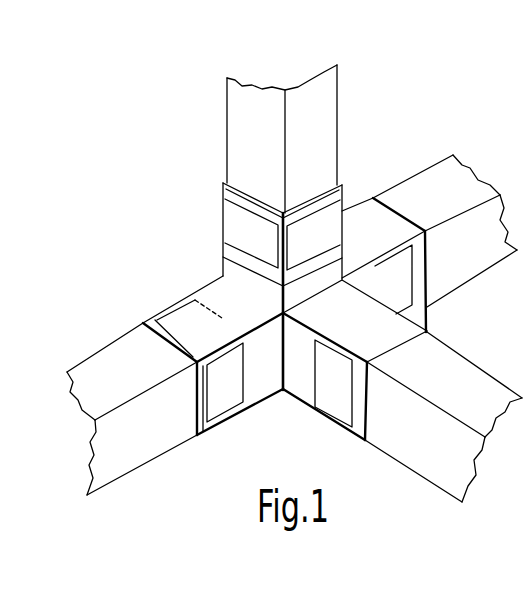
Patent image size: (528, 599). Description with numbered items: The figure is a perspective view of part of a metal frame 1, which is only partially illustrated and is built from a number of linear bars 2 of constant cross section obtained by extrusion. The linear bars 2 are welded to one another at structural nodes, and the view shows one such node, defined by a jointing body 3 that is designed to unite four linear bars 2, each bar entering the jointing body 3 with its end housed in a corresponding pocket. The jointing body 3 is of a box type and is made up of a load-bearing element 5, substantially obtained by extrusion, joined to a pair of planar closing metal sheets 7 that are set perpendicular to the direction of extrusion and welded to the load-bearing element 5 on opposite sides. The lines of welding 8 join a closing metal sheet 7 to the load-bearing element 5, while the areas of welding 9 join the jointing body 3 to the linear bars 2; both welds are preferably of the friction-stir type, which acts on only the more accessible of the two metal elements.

The metal frame 1 is at (386, 114).
The linear bar 2 is at (237, 98).
The jointing body 3 is at (181, 247).
The load-bearing element 5 is at (297, 383).
The planar closing metal sheet 7 is at (258, 383).
The line of welding 8 is at (222, 255).
The area of welding 9 is at (232, 215).